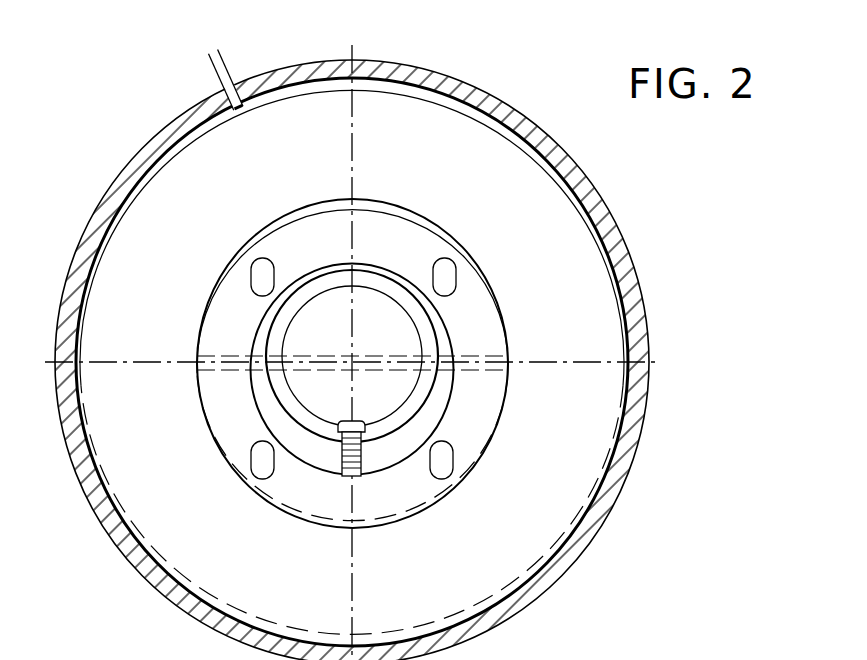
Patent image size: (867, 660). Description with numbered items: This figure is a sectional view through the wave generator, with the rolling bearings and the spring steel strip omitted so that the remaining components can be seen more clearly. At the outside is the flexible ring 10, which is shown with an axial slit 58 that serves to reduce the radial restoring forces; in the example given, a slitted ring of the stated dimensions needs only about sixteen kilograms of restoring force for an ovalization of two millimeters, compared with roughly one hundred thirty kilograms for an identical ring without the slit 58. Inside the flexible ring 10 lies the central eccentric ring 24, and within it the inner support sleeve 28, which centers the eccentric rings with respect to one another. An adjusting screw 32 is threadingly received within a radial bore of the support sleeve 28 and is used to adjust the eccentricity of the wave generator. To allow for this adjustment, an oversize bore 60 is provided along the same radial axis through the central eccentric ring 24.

The flexible ring 10 is at (498, 103).
The axial slit 58 is at (249, 46).
The central eccentric ring 24 is at (467, 294).
The inner support sleeve 28 is at (429, 348).
The oversize bore 60 is at (451, 463).
The adjusting screw 32 is at (338, 468).